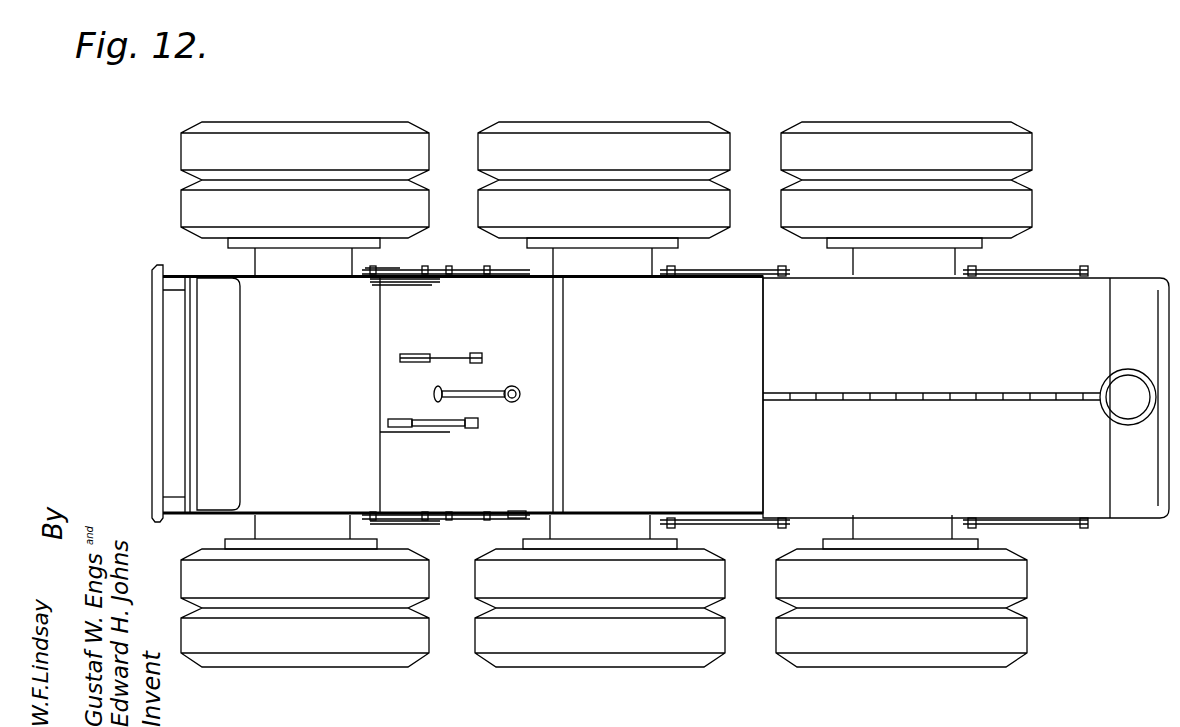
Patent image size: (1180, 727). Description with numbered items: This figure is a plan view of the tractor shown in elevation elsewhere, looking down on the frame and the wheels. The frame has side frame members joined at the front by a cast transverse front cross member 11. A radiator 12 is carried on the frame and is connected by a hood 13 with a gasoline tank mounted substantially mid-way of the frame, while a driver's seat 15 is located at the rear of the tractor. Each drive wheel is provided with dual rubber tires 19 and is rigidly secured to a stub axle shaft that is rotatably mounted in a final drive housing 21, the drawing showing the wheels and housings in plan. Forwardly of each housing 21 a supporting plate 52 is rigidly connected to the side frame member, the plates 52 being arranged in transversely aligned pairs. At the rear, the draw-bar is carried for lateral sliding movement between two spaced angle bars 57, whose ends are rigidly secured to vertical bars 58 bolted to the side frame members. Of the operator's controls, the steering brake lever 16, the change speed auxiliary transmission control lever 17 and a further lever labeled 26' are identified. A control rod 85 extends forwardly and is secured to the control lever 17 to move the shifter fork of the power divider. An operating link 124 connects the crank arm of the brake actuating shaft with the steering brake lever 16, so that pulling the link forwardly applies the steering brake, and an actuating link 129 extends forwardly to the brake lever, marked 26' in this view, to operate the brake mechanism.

The cast transverse front cross member 11 is at (663, 394).
The radiator 12 is at (1130, 282).
The hood 13 is at (966, 398).
The driver's seat 15 is at (207, 436).
The steering brake lever 16 is at (400, 420).
The change speed auxiliary transmission control lever 17 is at (510, 278).
The dual rubber tires 19 is at (422, 142).
The final drive housing 21 is at (262, 264).
The spring end clamp 26' is at (524, 499).
The plate 52 is at (410, 268).
The angle bars 57 is at (152, 463).
The vertical bars 58 is at (165, 518).
The control rod 85 is at (393, 281).
The operating link 124 is at (413, 433).
The actuating link 129 is at (382, 512).